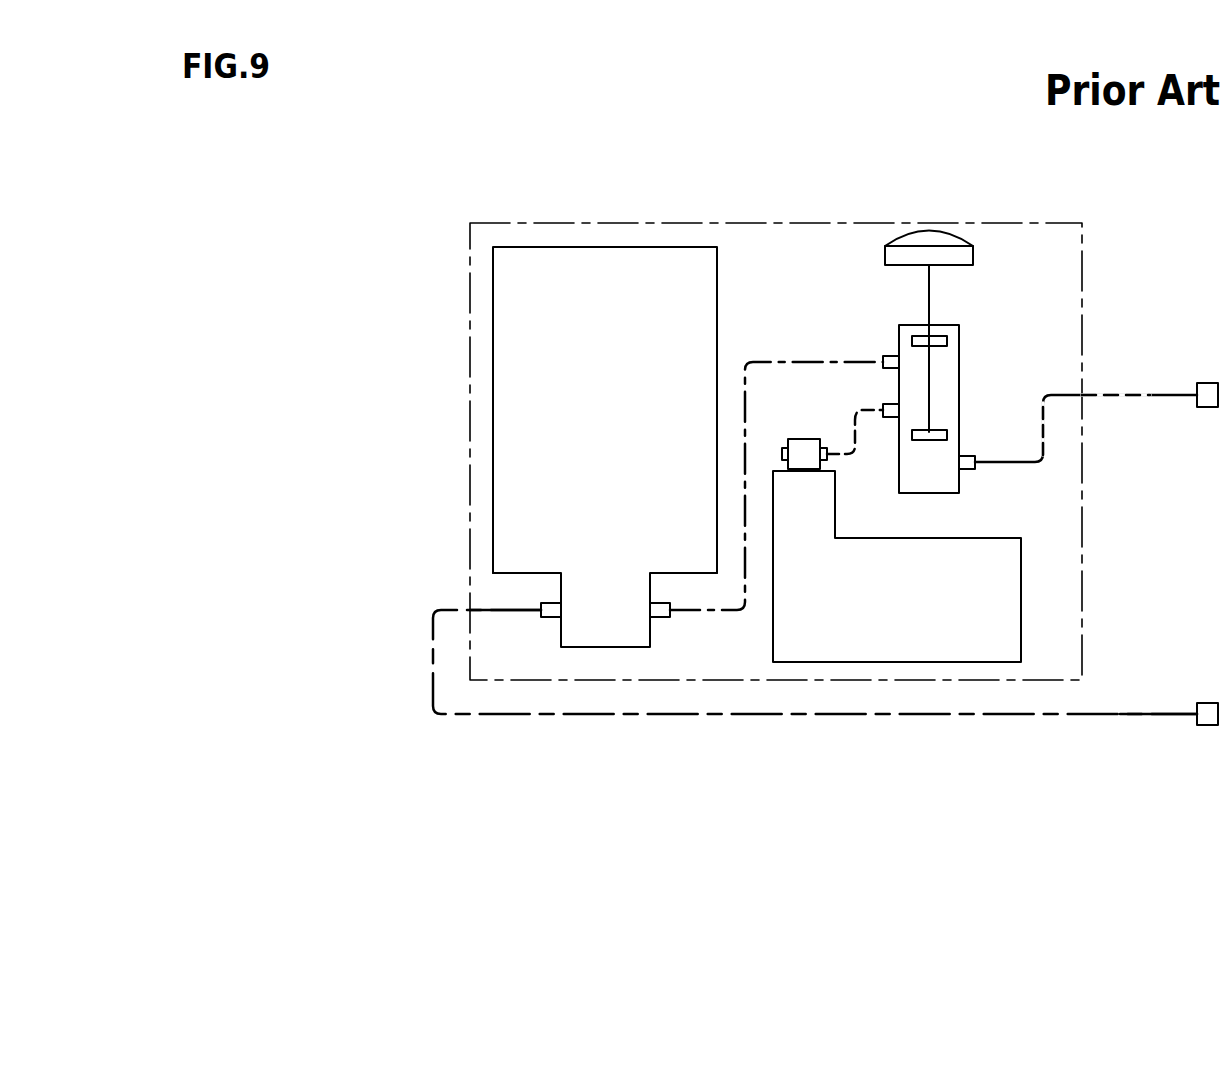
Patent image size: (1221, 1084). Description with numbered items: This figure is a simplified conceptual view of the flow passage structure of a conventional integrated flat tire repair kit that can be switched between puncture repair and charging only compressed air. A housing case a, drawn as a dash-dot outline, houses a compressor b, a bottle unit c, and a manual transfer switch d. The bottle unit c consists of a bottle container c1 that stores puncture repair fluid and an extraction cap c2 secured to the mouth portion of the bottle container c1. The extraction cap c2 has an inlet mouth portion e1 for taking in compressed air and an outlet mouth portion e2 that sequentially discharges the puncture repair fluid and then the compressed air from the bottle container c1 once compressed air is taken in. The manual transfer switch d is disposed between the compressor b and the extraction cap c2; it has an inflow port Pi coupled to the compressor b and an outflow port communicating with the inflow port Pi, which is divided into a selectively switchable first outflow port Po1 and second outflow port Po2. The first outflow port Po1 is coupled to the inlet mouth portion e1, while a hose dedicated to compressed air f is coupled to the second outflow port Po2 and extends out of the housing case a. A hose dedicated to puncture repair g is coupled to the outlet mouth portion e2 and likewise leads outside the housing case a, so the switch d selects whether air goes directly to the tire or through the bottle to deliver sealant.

The housing case a is at (540, 223).
The compressor b is at (813, 662).
The bottle unit c is at (500, 447).
The bottle container c1 is at (493, 385).
The extraction cap c2 is at (560, 587).
The manual transfer switch d is at (970, 354).
The inlet mouth portion e1 is at (665, 617).
The outlet mouth portion e2 is at (550, 617).
The hose dedicated to compressed air f is at (1150, 395).
The hose dedicated to puncture repair g is at (1055, 714).
The first outflow port Po1 is at (888, 352).
The second outflow port Po2 is at (980, 476).
The inflow port Pi is at (888, 424).